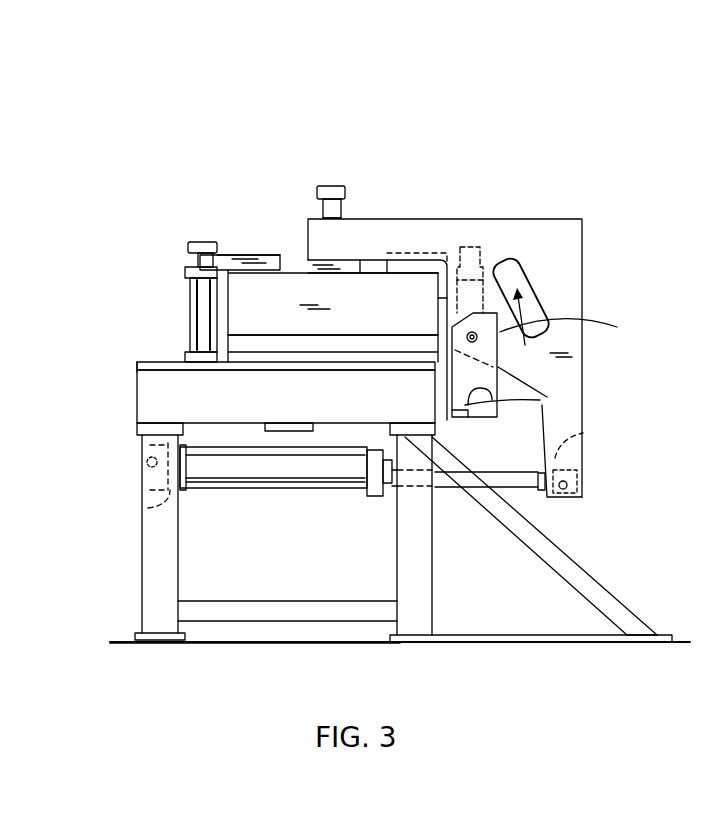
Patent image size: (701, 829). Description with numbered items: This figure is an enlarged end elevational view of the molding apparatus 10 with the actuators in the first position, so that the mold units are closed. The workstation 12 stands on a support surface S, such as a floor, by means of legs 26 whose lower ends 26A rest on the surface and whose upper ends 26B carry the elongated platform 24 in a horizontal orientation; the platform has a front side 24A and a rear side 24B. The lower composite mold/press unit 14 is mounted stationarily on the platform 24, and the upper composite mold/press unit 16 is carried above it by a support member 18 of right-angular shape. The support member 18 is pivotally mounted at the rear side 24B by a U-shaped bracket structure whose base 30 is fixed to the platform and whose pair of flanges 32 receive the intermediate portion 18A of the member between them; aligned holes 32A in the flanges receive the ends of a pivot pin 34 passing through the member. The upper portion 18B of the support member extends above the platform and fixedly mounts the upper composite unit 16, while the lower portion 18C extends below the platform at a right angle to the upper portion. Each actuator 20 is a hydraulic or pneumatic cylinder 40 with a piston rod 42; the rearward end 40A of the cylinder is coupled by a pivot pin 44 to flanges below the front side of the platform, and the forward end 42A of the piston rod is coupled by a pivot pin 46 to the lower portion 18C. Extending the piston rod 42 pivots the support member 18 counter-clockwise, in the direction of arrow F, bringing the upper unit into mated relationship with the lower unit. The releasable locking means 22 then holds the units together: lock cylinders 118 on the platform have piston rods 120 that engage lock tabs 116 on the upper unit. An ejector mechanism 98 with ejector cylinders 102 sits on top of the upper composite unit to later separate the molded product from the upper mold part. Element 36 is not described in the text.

The molding apparatus 10 is at (178, 182).
The workstation 12 is at (135, 410).
The lower composite mold/press unit 14 is at (315, 340).
The upper composite mold/press unit 16 is at (288, 290).
The support member 18 is at (587, 260).
The intermediate portion 18A is at (492, 263).
The upper portion 18B is at (457, 235).
The lower portion 18C is at (565, 415).
The actuator 20 is at (265, 493).
The releasable locking means 22 is at (178, 232).
The platform 24 is at (136, 385).
The front side 24A is at (137, 372).
The rear side 24B is at (542, 405).
The leg 26 is at (140, 572).
The lower end 26A is at (170, 636).
The upper end 26B is at (157, 427).
The base 30 is at (437, 395).
The flange 32 is at (460, 416).
The aligned hole 32A is at (468, 335).
The pivot pin 34 is at (468, 337).
The base plate 36 is at (610, 588).
The hydraulic or pneumatic cylinder 40 is at (250, 490).
The rearward end 40A is at (148, 508).
The piston rod 42 is at (518, 488).
The forward end 42A is at (583, 433).
The pivot pin 44 is at (145, 468).
The pivot pin 46 is at (585, 484).
The ejector mechanism 98 is at (330, 173).
The ejector cylinder 102 is at (347, 203).
The lock tab 116 is at (237, 255).
The lock cylinder 118 is at (190, 300).
The piston rod 120 is at (190, 255).
The first direction arrow F is at (568, 328).
The support surface S is at (125, 641).